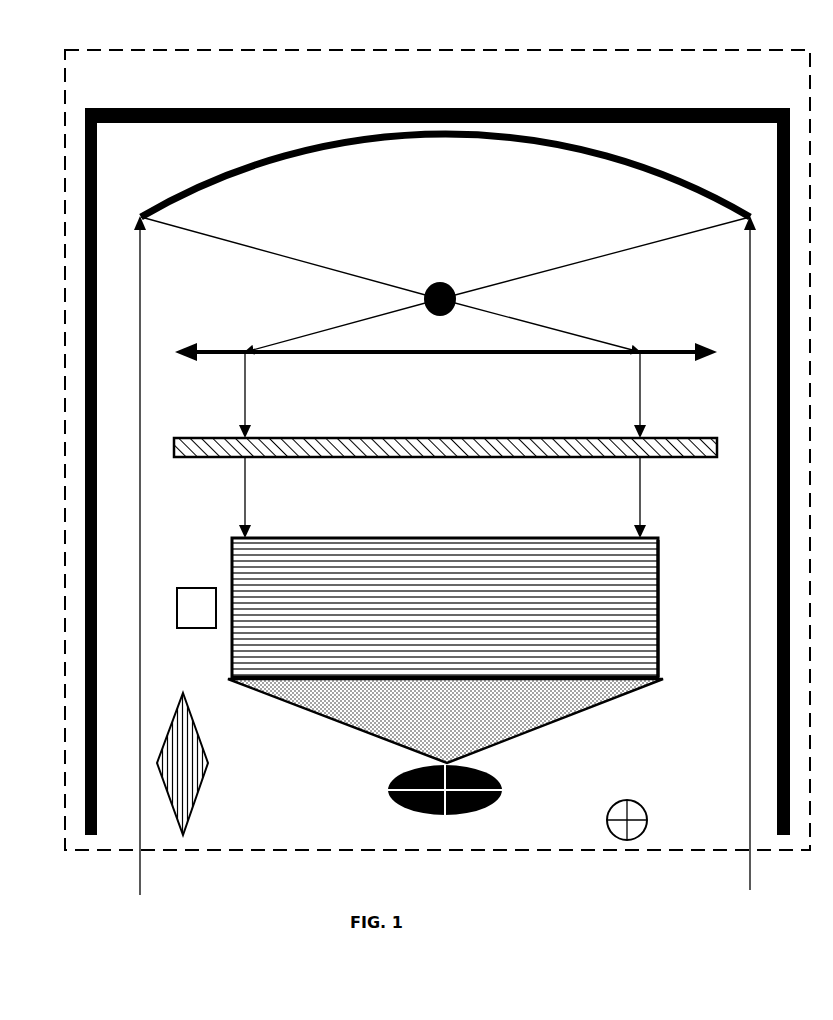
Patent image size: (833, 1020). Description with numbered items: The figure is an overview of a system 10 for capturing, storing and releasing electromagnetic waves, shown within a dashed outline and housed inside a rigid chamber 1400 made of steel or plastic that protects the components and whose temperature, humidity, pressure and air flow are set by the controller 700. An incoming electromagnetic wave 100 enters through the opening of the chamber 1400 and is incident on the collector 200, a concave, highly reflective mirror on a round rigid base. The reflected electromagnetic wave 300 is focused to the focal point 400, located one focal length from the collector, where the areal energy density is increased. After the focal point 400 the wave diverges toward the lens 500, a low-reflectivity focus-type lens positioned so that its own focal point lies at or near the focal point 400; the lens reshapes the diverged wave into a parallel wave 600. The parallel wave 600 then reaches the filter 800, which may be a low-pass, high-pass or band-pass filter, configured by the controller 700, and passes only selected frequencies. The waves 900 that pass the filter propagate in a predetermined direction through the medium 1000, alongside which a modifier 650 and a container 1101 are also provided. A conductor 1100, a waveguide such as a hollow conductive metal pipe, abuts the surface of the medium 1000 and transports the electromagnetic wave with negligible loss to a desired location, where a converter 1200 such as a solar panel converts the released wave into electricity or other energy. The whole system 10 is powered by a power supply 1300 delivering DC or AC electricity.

The system 10 is at (443, 43).
The electromagnetic wave 100 is at (152, 878).
The collector 200 is at (213, 172).
The reflected electromagnetic wave 300 is at (245, 232).
The focal point 400 is at (430, 275).
The lens 500 is at (225, 348).
The parallel wave 600 is at (257, 400).
The modifier 650 is at (198, 582).
The controller 700 is at (203, 803).
The filter 800 is at (453, 430).
The waves 900 is at (257, 502).
The medium 1000 is at (458, 555).
The conductor 1100 is at (583, 707).
The container 1101 is at (660, 593).
The converter 1200 is at (507, 792).
The power supply 1300 is at (642, 793).
The chamber 1400 is at (422, 107).